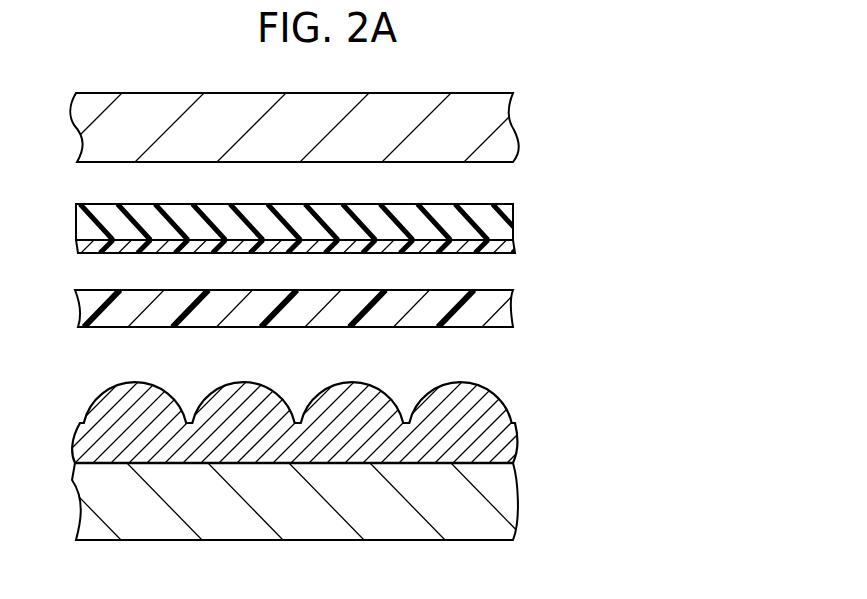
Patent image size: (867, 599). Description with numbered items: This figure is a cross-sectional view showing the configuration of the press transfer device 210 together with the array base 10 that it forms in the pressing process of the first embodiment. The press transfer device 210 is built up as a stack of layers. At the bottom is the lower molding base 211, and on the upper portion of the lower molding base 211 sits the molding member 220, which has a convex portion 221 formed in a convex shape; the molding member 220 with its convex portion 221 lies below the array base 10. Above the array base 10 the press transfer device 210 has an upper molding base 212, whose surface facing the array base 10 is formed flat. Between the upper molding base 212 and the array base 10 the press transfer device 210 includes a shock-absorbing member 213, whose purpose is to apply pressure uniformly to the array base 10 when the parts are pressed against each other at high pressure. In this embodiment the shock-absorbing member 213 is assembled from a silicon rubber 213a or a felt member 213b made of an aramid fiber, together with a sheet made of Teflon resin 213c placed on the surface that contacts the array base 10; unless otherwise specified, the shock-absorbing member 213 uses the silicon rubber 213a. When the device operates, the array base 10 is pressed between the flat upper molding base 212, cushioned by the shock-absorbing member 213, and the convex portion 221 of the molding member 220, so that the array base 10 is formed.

The press transfer device 210 is at (395, 318).
The upper molding base 212 is at (506, 122).
The shock-absorbing member 213 is at (388, 226).
The silicon rubber 213a is at (360, 219).
The felt member 213b is at (510, 212).
The sheet made of Teflon resin 213c is at (513, 240).
The array base 10 is at (506, 309).
The convex portion 221 is at (494, 400).
The molding member 220 is at (298, 418).
The lower molding base 211 is at (321, 501).